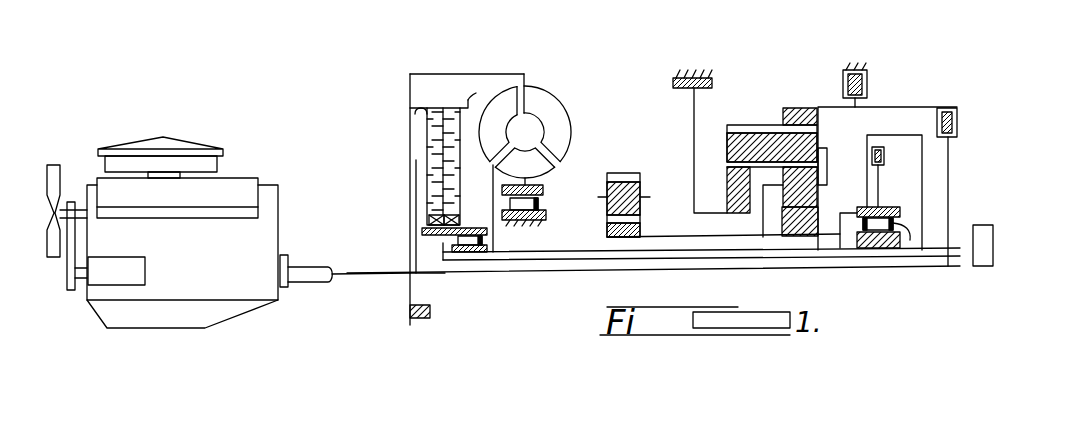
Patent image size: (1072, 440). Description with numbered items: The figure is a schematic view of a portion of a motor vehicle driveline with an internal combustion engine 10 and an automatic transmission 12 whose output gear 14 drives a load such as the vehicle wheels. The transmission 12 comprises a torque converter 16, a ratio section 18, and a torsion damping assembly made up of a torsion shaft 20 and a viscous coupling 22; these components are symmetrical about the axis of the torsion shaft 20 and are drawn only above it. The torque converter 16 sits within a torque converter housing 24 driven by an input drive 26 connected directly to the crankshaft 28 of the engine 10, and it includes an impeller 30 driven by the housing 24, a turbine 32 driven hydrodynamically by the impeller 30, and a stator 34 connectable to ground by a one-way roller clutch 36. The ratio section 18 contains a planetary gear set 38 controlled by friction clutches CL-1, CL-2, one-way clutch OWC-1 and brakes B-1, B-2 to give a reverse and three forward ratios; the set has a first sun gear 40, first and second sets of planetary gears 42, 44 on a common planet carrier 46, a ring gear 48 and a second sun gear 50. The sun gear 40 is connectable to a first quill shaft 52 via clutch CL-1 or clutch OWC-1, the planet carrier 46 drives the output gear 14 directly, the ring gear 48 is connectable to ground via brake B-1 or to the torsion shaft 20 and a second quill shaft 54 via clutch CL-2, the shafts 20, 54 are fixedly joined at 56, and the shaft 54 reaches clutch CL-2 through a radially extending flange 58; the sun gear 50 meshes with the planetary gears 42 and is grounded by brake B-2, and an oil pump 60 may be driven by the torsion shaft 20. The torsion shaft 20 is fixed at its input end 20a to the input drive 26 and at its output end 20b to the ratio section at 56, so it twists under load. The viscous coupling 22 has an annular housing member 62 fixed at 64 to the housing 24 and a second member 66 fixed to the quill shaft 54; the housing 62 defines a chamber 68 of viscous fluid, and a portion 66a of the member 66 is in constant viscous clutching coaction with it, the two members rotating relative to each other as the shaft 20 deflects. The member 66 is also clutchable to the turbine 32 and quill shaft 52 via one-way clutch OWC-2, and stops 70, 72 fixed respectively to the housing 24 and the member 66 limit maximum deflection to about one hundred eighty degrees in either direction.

The internal combustion engine 10 is at (238, 156).
The automatic transmission 12 is at (631, 61).
The output gear 14 is at (618, 170).
The torque converter 16 is at (476, 52).
The ratio section 18 is at (814, 61).
The torsion shaft 20 is at (676, 272).
The input end 20a is at (413, 274).
The output end 20b is at (937, 266).
The viscous coupling 22 is at (420, 146).
The torque converter housing 24 is at (438, 73).
The input drive 26 is at (381, 275).
The crankshaft 28 is at (320, 283).
The impeller 30 is at (551, 89).
The turbine 32 is at (519, 85).
The stator 34 is at (553, 176).
The one-way roller clutch 36 is at (543, 204).
The planetary gear set 38 is at (764, 119).
The first sun gear 40 is at (782, 218).
The first set of planetary gears 42 is at (820, 140).
The second set of planetary gears 44 is at (817, 197).
The planet carrier 46 is at (827, 167).
The ring gear 48 is at (801, 107).
The second sun gear 50 is at (727, 184).
The first quill shaft 52 is at (827, 250).
The second quill shaft 54 is at (760, 258).
The interconnection 56 is at (951, 262).
The radially extending flange 58 is at (948, 179).
The oil pump 60 is at (995, 236).
The annular housing member 62 is at (434, 103).
The fixing point 64 is at (416, 112).
The second member 66 is at (437, 246).
The portion 66a is at (440, 169).
The chamber 68 is at (463, 90).
The stop 70 is at (436, 313).
The stop 72 is at (435, 232).
The brake B-1 is at (867, 85).
The brake B-2 is at (674, 79).
The friction clutch CL-1 is at (884, 157).
The friction clutch CL-2 is at (957, 122).
The one-way clutch OWC-1 is at (908, 231).
The one-way clutch OWC-2 is at (477, 257).